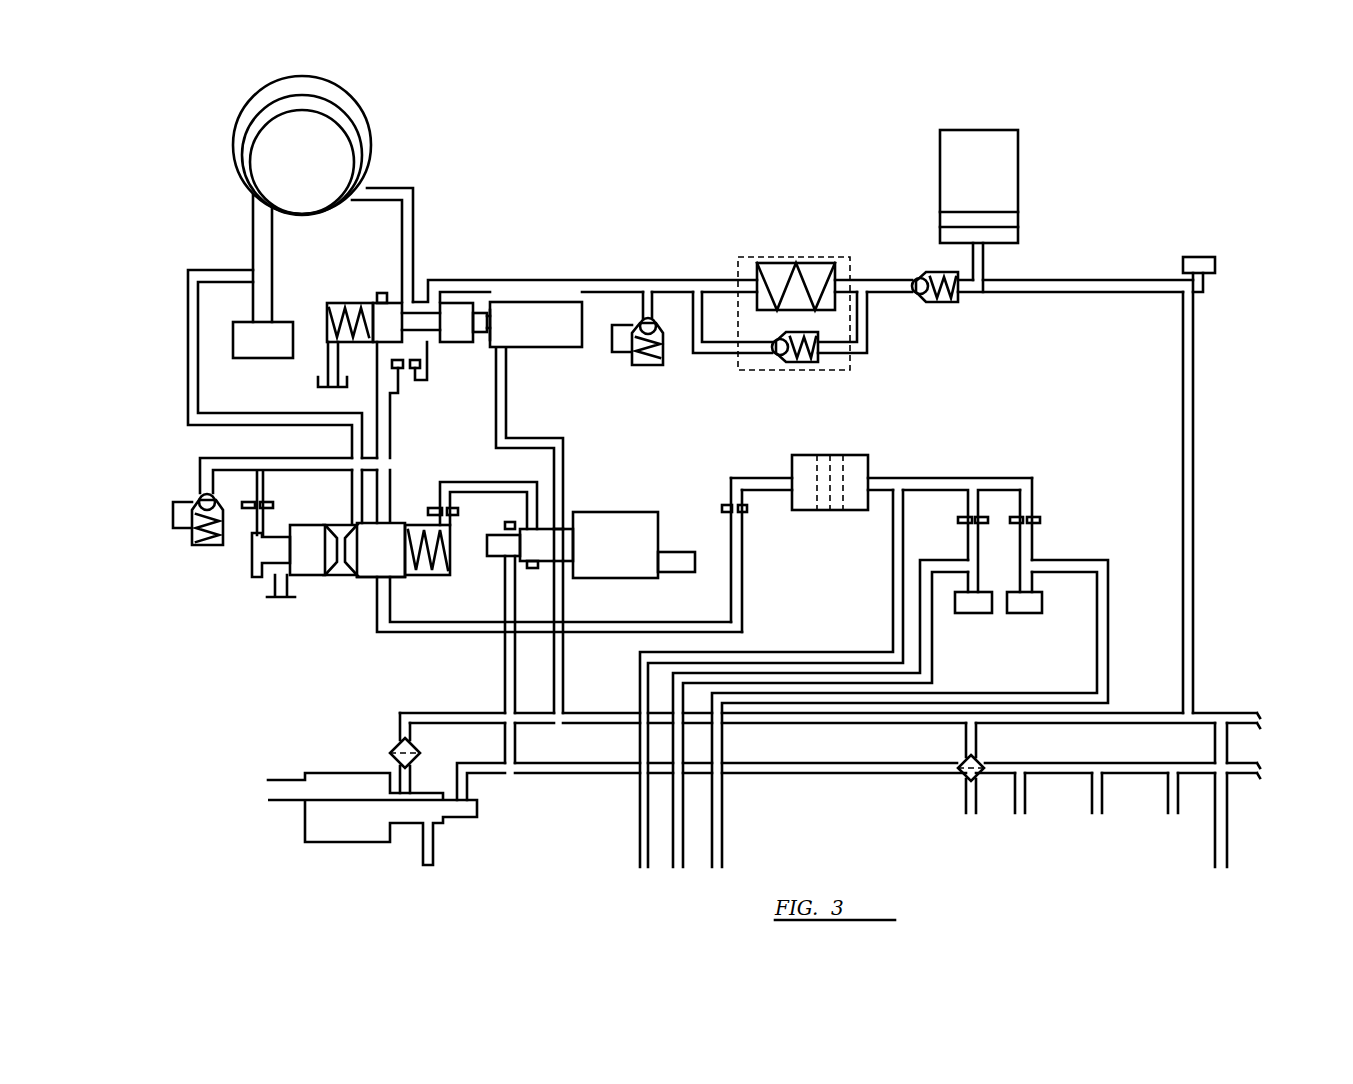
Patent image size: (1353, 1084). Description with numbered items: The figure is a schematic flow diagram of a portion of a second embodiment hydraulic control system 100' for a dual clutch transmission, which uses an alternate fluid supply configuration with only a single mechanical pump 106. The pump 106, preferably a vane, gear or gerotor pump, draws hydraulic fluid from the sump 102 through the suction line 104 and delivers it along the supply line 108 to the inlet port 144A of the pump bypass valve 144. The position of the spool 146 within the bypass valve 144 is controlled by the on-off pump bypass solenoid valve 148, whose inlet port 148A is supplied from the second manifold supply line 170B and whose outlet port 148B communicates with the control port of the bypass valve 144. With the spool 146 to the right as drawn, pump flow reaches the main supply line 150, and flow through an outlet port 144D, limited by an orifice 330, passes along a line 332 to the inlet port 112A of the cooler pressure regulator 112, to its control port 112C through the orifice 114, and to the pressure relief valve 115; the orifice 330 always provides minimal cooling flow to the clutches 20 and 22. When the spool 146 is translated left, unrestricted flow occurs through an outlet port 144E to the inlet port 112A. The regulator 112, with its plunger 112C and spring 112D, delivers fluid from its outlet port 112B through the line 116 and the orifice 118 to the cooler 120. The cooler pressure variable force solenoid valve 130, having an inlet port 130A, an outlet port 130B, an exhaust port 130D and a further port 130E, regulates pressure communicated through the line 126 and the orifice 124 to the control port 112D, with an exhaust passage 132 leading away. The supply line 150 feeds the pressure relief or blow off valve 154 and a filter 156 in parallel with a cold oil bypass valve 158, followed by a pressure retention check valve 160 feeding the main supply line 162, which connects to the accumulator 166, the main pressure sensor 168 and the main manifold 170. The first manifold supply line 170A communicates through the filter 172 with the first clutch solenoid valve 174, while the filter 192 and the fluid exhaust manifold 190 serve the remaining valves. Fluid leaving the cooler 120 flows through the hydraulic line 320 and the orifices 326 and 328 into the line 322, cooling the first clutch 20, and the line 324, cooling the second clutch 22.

The second embodiment hydraulic control system 100' is at (778, 160).
The common sump 102 is at (258, 338).
The suction line 104 is at (252, 307).
The mechanical pump 106 is at (262, 147).
The supply line 108 is at (420, 200).
The cooler pressure regulator 112 is at (240, 615).
The inlet port 112A is at (383, 520).
The outlet port 112B is at (383, 578).
The first control port 112C is at (250, 555).
The second control port 112D is at (453, 525).
The flow restricting orifice 114 is at (260, 498).
The pressure relief valve 115 is at (190, 530).
The line 116 is at (745, 566).
The orifice 118 is at (735, 500).
The hydraulic fluid cooler 120 is at (847, 462).
The orifice 124 is at (437, 505).
The hydraulic line 126 is at (480, 480).
The cooler pressure variable force solenoid valve 130 is at (668, 548).
The inlet port 130A is at (565, 562).
The outlet port 130B is at (565, 530).
The second outlet port 130D is at (560, 527).
The control valve port 130E is at (515, 522).
The exhaust line 132 is at (503, 657).
The pump bypass valve 144 is at (455, 303).
The inlet port 144A is at (425, 292).
The outlet port 144D is at (390, 372).
The outlet port 144E is at (385, 347).
The spool 146 is at (457, 333).
The pump bypass solenoid valve 148 is at (552, 320).
The inlet port 148A is at (505, 355).
The outlet port 148B is at (492, 320).
The main supply line 150 is at (638, 282).
The pressure relief or line blow off valve 154 is at (650, 365).
The filter 156 is at (790, 270).
The cold oil bypass valve 158 is at (806, 360).
The pressure retention check valve 160 is at (945, 300).
The main supply line 162 is at (1196, 390).
The accumulator 166 is at (1000, 172).
The main pressure sensor 168 is at (1208, 263).
The main manifold 170 is at (828, 725).
The first manifold supply line 170A is at (400, 737).
The second manifold supply line 170B is at (610, 670).
The filter 172 is at (410, 745).
The first clutch variable force solenoid valve 174 is at (332, 860).
The fluid exhaust manifold 190 is at (578, 775).
The filter 192 is at (960, 778).
The first clutch 20 is at (978, 615).
The second clutch 22 is at (1025, 615).
The hydraulic line 320 is at (875, 653).
The line 322 is at (940, 562).
The line 324 is at (1110, 610).
The flow controlling orifice 326 is at (962, 517).
The flow controlling orifice 328 is at (1045, 520).
The orifice 330 is at (420, 372).
The line 332 is at (377, 428).